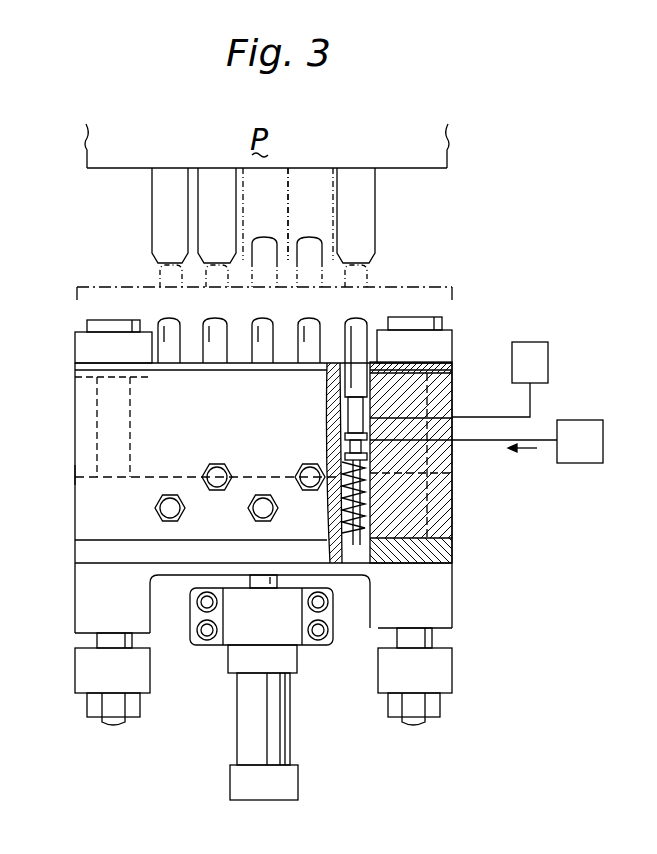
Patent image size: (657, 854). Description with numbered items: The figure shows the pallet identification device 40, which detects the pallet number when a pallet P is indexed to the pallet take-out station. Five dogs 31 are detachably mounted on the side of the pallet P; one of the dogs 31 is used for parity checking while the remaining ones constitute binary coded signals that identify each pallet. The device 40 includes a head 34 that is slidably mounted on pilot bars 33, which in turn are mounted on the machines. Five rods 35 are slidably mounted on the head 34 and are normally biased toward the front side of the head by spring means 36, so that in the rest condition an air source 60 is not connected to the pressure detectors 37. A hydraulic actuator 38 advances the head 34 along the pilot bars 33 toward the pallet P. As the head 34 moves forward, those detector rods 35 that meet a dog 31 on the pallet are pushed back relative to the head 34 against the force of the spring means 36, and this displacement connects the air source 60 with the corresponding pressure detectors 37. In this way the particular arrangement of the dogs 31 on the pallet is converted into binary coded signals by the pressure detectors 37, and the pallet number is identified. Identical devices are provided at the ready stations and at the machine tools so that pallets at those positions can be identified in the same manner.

The dogs 31 is at (210, 200).
The pilot bars 33 is at (97, 415).
The head 34 is at (267, 441).
The rods 35 is at (166, 330).
The spring means 36 is at (420, 506).
The pressure detectors 37 is at (530, 352).
The hydraulic actuator 38 is at (248, 720).
The pallet identification device 40 is at (63, 472).
The air source 60 is at (577, 423).